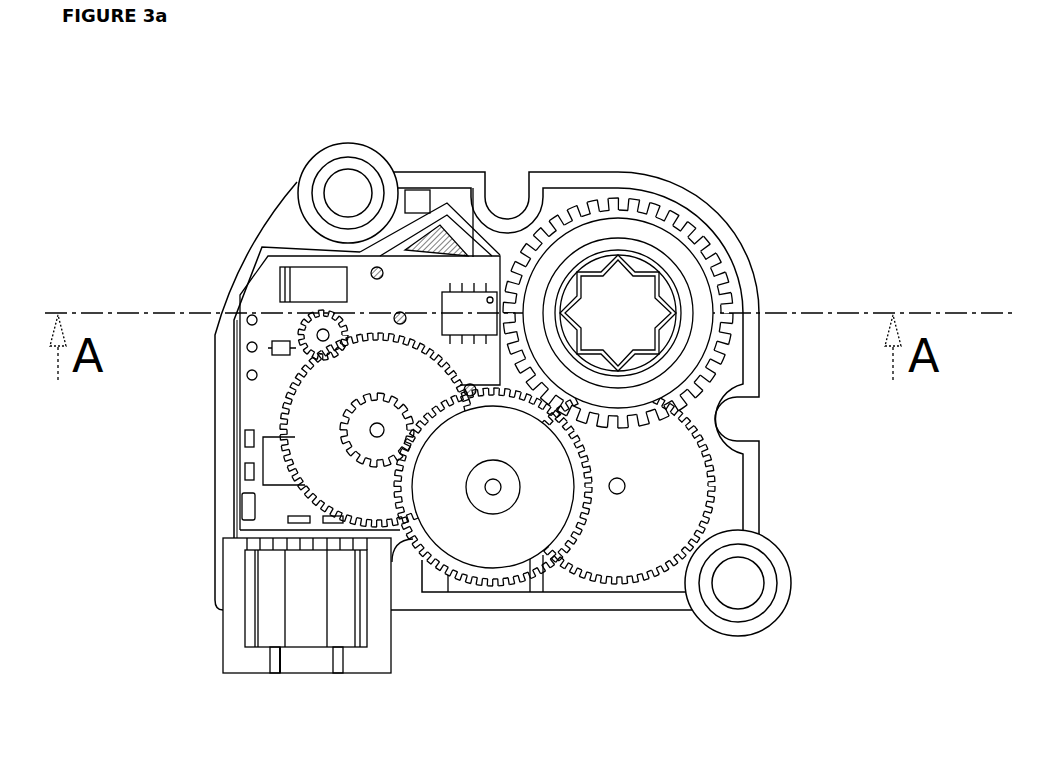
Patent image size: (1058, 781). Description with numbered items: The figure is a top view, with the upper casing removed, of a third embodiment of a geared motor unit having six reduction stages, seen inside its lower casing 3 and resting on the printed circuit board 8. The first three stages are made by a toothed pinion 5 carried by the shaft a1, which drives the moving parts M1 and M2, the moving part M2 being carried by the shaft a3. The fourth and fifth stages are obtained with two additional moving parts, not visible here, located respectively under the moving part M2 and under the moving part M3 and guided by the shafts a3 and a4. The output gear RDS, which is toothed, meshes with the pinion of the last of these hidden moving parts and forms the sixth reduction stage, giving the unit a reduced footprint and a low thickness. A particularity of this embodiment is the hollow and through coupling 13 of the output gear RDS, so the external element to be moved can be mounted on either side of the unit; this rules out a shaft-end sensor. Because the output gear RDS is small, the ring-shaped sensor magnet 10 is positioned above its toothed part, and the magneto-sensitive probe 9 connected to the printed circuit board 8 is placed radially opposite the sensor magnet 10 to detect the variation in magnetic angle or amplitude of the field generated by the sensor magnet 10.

The lower casing 3 is at (263, 210).
The printed circuit board 8 is at (262, 293).
The magneto-sensitive probe 9 is at (473, 293).
The sensor magnet 10 is at (594, 233).
The output gear RDS is at (677, 224).
The hollow and through coupling 13 is at (627, 263).
The shaft a1 is at (310, 335).
The toothed pinion 5 is at (287, 345).
The moving part M1 is at (318, 473).
The moving part M2 is at (473, 553).
The moving part M3 is at (617, 543).
The shaft a3 is at (497, 495).
The shaft a4 is at (626, 487).